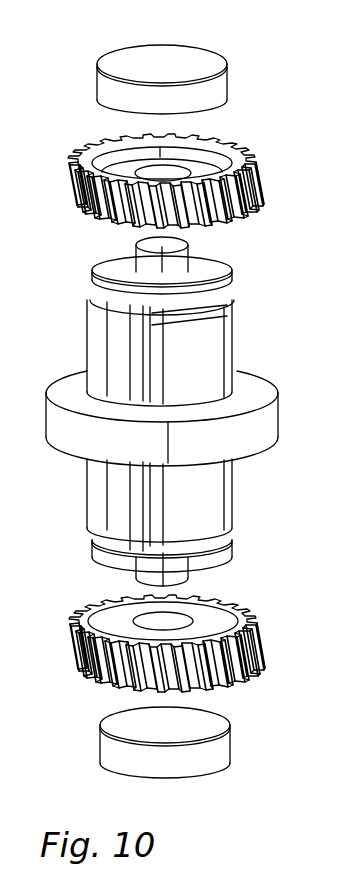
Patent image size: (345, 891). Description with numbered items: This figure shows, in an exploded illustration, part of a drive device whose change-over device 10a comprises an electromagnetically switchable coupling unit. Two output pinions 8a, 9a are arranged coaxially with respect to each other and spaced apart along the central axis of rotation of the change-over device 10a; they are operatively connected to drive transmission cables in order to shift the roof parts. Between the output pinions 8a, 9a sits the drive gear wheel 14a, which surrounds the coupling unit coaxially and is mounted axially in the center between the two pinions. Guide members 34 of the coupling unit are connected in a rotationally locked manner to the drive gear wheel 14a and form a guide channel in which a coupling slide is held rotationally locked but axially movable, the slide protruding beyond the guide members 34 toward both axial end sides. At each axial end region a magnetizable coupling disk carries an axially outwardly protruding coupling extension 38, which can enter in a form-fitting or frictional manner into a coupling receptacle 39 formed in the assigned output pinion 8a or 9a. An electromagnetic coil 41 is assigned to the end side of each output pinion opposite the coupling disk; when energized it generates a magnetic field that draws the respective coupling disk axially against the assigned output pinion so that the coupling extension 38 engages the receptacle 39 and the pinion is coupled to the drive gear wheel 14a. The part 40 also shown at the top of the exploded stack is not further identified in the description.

The upper cover disc 40 is at (212, 62).
The coupling receptacle 39 is at (164, 175).
The output pinion 9a is at (255, 160).
The change-over device 10a is at (272, 265).
The coupling extension 38 is at (188, 247).
The guide members 34 is at (98, 347).
The drive gear wheel 14a is at (277, 407).
The output pinion 8a is at (257, 658).
The electromagnetic coil 41 is at (120, 730).